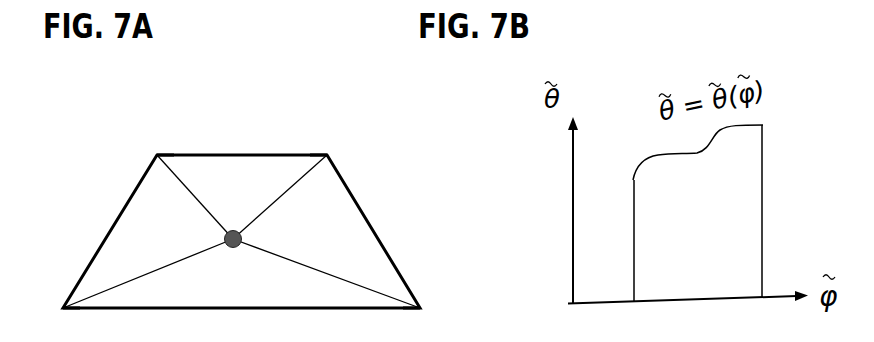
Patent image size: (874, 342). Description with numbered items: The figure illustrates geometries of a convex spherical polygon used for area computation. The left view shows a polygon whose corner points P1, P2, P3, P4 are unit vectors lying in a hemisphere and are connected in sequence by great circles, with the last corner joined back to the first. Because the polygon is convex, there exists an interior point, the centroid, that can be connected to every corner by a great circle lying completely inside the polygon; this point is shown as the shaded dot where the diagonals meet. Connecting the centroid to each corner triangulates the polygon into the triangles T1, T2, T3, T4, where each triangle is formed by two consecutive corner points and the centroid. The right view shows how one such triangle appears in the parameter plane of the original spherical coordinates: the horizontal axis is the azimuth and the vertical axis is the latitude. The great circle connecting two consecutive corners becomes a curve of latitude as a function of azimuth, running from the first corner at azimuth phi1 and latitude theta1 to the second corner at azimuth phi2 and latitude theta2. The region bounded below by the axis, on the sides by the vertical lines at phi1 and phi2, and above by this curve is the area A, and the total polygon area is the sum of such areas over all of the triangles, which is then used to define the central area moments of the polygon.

In FIG. 7A, the first corner point P1 is at (49, 305).
In FIG. 7A, the second corner point P2 is at (437, 306).
In FIG. 7A, the third corner point P3 is at (334, 143).
In FIG. 7A, the fourth corner point P4 is at (146, 134).
In FIG. 7A, the first triangle T1 is at (241, 273).
In FIG. 7A, the second triangle T2 is at (314, 232).
In FIG. 7A, the third triangle T3 is at (242, 197).
In FIG. 7A, the fourth triangle T4 is at (164, 239).
In FIG. 7B, the area of polygon A is at (698, 175).
In FIG. 7B, the first azimuth coordinate phi1 is at (628, 306).
In FIG. 7B, the second azimuth coordinate phi2 is at (762, 304).
In FIG. 7B, the first latitude coordinate theta1 is at (625, 145).
In FIG. 7B, the second latitude coordinate theta2 is at (783, 107).